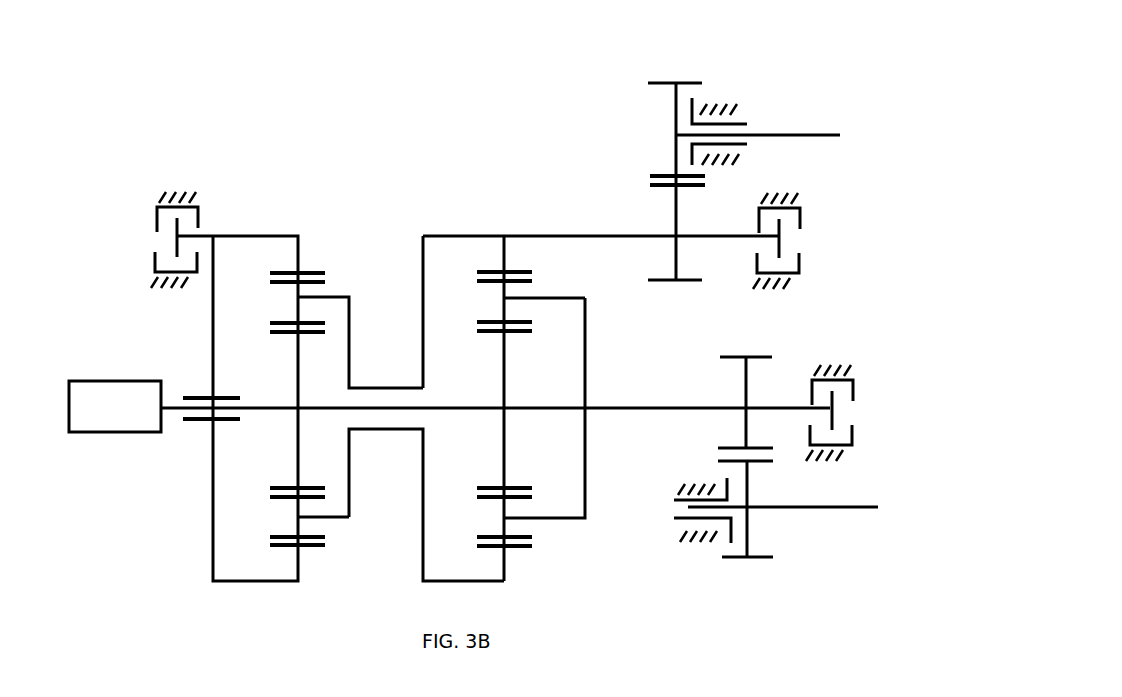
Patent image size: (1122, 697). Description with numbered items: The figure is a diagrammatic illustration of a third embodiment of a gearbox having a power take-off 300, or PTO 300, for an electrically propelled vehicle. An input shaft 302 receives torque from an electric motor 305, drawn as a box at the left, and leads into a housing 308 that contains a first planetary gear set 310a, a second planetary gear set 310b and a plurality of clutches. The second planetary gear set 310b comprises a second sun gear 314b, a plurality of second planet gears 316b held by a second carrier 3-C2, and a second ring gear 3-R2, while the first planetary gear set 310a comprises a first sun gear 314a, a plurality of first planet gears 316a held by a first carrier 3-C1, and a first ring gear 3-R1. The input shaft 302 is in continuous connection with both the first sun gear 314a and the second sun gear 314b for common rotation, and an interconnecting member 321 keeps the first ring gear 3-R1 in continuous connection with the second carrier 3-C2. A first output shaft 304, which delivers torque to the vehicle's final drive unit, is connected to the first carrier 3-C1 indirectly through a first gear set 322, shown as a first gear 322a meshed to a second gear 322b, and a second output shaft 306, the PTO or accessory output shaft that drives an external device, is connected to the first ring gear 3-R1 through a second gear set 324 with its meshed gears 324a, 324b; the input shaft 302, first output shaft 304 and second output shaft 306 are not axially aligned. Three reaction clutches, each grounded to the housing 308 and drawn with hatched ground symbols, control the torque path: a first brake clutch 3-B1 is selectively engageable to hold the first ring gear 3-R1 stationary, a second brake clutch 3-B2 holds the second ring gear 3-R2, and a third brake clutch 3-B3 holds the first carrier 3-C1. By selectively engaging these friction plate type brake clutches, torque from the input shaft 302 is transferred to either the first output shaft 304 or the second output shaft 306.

The gearbox having a power take-off 300 is at (343, 205).
The input shaft 302 is at (182, 398).
The first output shaft 304 is at (863, 508).
The electric motor 305 is at (115, 406).
The second output shaft 306 is at (820, 135).
The housing 308 is at (740, 107).
The first planetary gear set 310a is at (568, 395).
The second planetary gear set 310b is at (208, 390).
The first sun gear 314a is at (502, 444).
The second sun gear 314b is at (298, 383).
The first planet gears 316a is at (502, 291).
The second planet gears 316b is at (298, 523).
The interconnecting member 321 is at (422, 535).
The first gear set 322 is at (743, 493).
The first gear set 322a is at (738, 392).
The second transfer gear 322b is at (743, 538).
The second gear set 324 is at (675, 144).
The idler gear shaft 324a is at (673, 123).
The idler gear mesh 324b is at (670, 202).
The first brake clutch 3-B1 is at (806, 241).
The second brake clutch 3-B2 is at (154, 250).
The third brake clutch 3-B3 is at (862, 411).
The first carrier 3-C1 is at (582, 472).
The second carrier 3-C2 is at (350, 295).
The first ring gear 3-R1 is at (455, 235).
The second ring gear 3-R2 is at (232, 235).